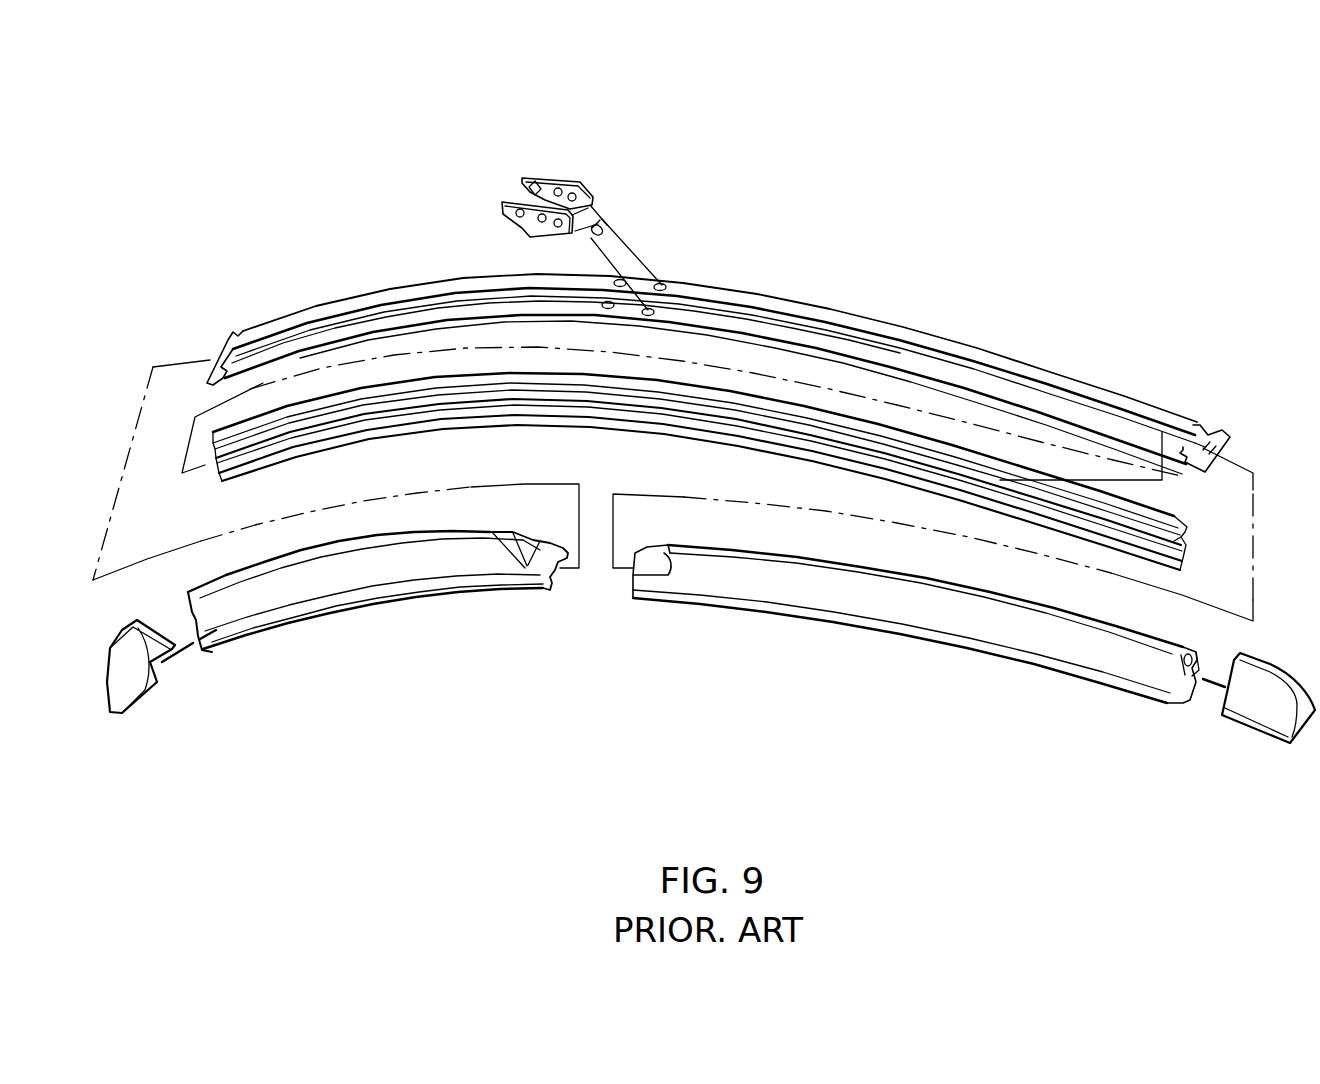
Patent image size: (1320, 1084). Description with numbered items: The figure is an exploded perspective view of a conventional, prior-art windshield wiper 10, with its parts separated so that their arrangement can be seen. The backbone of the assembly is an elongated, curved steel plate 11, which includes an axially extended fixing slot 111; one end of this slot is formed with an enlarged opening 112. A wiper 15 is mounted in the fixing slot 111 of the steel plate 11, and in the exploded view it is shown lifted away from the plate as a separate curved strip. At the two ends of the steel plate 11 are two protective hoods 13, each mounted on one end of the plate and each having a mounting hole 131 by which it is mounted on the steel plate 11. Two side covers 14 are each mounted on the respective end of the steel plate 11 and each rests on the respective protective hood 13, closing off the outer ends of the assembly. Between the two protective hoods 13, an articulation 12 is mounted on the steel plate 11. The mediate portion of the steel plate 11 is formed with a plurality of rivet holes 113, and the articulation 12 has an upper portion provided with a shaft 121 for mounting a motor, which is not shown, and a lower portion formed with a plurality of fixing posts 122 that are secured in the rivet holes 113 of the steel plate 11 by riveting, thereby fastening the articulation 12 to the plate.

The conventional windshield wiper 10 is at (808, 278).
The steel plate 11 is at (343, 303).
The fixing slot 111 is at (960, 350).
The enlarged opening 112 is at (1170, 433).
The rivet holes 113 is at (660, 283).
The articulation 12 is at (565, 187).
The shaft 121 is at (522, 178).
The fixing posts 122 is at (598, 223).
The protective hoods 13 is at (343, 568).
The mounting hole 131 is at (1185, 677).
The side covers 14 is at (132, 677).
The wiper 15 is at (1186, 545).